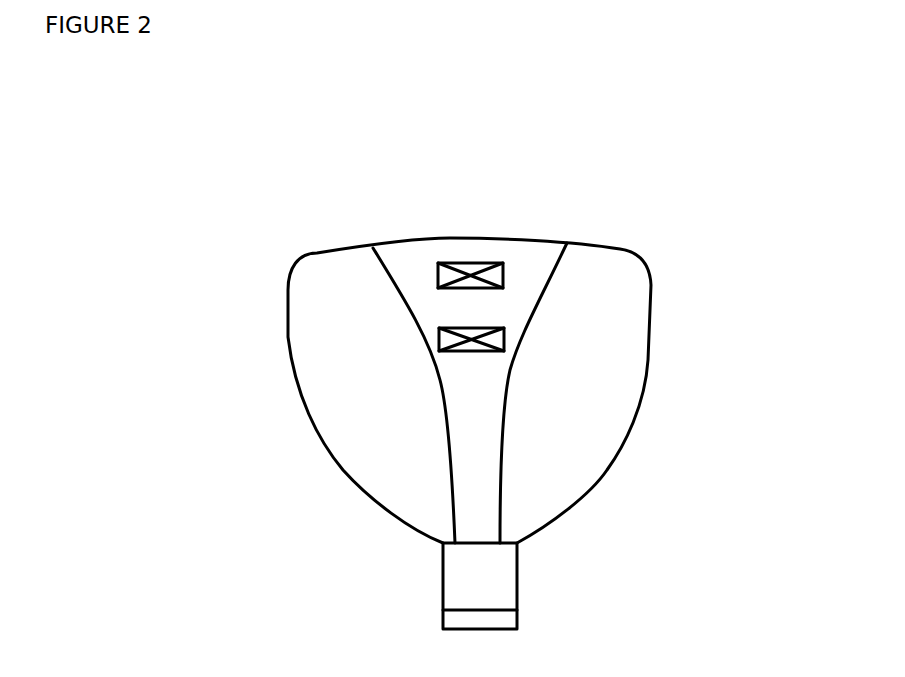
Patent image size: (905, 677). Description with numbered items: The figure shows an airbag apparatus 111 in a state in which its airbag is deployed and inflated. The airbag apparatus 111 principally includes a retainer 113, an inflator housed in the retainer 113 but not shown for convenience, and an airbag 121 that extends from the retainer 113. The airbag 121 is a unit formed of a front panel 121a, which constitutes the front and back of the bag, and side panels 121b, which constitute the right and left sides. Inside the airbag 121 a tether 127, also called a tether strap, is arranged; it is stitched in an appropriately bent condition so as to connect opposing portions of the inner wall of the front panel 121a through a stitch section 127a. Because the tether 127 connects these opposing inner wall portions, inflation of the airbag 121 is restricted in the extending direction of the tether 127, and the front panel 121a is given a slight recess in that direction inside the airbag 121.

The airbag apparatus 111 is at (388, 580).
The retainer 113 is at (500, 573).
The airbag 121 is at (546, 193).
The front panel 121a is at (392, 252).
The side panels 121b is at (377, 407).
The tether 127 is at (500, 337).
The stitch section 127a is at (462, 328).